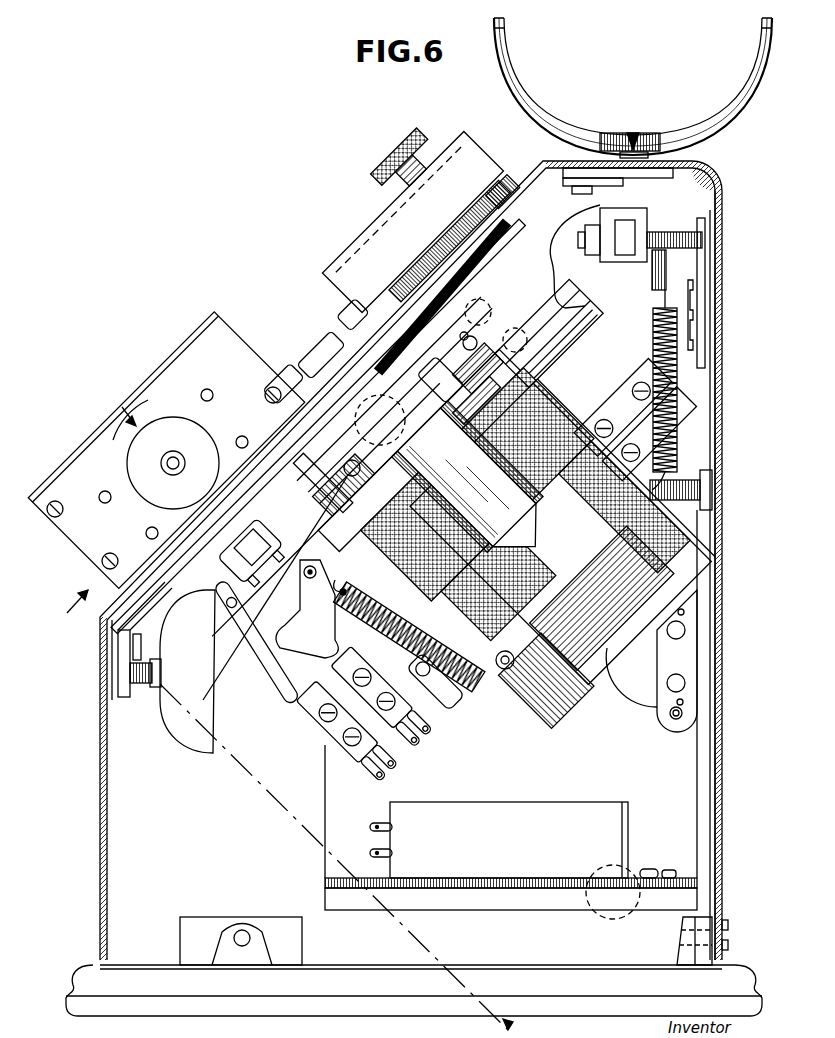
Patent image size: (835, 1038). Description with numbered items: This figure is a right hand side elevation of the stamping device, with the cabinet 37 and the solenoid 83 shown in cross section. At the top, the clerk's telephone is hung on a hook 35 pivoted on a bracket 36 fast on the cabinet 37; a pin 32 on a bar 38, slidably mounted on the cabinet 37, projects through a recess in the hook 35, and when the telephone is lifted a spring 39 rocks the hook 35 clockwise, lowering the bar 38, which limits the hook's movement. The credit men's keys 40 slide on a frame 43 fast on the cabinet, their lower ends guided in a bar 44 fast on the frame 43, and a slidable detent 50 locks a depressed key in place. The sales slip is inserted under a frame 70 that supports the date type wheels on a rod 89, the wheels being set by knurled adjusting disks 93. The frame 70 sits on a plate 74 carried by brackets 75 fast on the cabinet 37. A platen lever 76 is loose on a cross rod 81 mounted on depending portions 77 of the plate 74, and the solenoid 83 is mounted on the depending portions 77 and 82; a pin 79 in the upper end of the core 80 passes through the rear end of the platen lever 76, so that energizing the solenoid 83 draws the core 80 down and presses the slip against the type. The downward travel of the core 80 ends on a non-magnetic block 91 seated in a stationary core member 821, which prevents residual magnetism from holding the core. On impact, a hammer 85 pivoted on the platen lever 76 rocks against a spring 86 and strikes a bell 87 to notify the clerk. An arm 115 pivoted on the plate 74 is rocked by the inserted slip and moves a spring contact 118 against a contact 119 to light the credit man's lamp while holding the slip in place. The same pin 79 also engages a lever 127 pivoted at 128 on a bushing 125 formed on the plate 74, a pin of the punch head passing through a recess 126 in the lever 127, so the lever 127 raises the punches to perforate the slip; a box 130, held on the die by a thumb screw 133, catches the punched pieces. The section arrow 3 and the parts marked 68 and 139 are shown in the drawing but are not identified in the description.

The section line 3- 3 is at (285, 801).
The pin 32 is at (681, 231).
The hook 35 is at (700, 138).
The bracket 36 is at (655, 211).
The cabinet 37 is at (722, 448).
The bar 38 is at (706, 259).
The spring 39 is at (680, 386).
The keys 40 is at (348, 308).
The frame 43 is at (327, 778).
The bar 44 is at (313, 726).
The detent 50 is at (612, 250).
The mounting plate 68 is at (607, 351).
The frame 70 is at (188, 353).
The plate 74 is at (278, 435).
The brackets 75 is at (558, 166).
The platen lever 76 is at (296, 525).
The depending portions 77 is at (380, 586).
The pin 79 is at (472, 386).
The core 80 is at (503, 708).
The cross rod 81 is at (336, 480).
The depending portion 82 is at (496, 470).
The solenoid 83 is at (700, 527).
The hammer 85 is at (282, 650).
The spring 86 is at (474, 695).
The bell 87 is at (212, 720).
The rod 89 is at (166, 472).
The block 91 is at (578, 595).
The adjusting disks 93 is at (130, 455).
The arm 115 is at (343, 470).
The spring contact 118 is at (306, 362).
The contact 119 is at (322, 345).
The bushing 125 is at (586, 305).
The recess 126 is at (541, 338).
The lever 127 is at (440, 430).
The pivot 128 is at (550, 350).
The box 130 is at (465, 145).
The thumb screw 133 is at (407, 136).
The end cap 139 is at (505, 178).
The stationary core member 821 is at (649, 662).